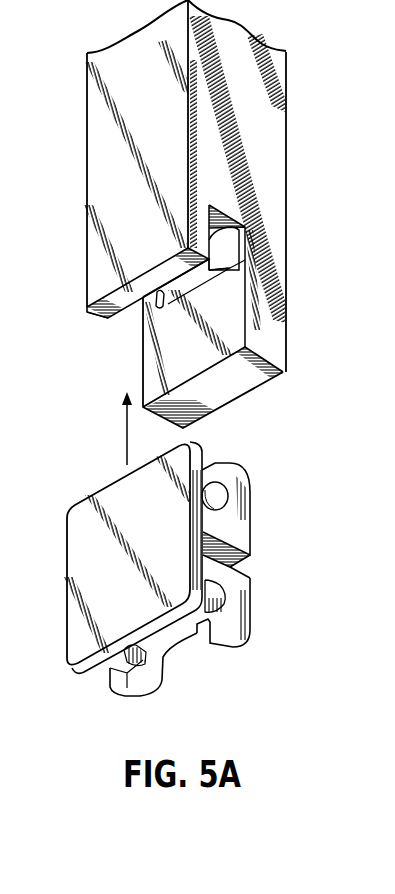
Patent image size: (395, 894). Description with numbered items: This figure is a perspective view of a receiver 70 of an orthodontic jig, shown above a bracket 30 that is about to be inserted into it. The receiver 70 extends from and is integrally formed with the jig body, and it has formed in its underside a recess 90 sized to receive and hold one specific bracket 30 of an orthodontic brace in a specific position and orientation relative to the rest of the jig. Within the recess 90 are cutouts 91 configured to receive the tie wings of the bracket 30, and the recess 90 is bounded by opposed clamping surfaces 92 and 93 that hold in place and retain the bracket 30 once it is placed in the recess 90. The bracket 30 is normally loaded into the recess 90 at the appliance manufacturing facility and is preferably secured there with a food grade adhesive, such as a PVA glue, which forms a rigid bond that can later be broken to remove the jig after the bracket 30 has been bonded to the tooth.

The receiver 70 is at (68, 152).
The recess 90 is at (227, 282).
The cutouts 91 is at (222, 258).
The clamping surface 92 is at (119, 314).
The clamping surface 93 is at (144, 372).
The bracket 30 is at (52, 585).